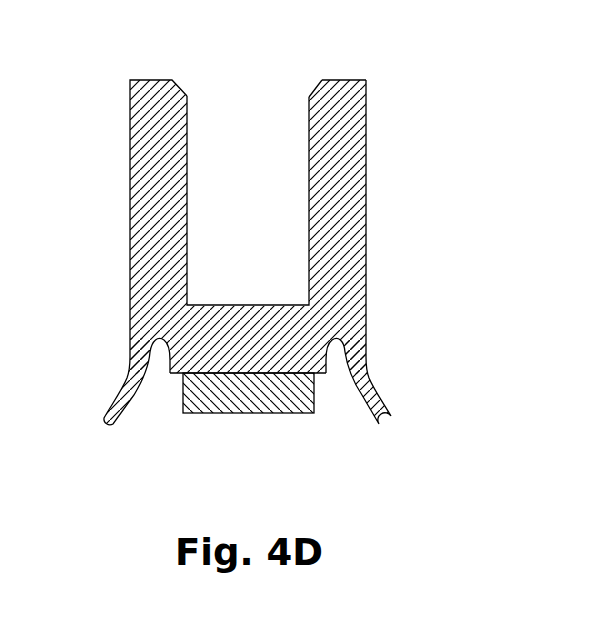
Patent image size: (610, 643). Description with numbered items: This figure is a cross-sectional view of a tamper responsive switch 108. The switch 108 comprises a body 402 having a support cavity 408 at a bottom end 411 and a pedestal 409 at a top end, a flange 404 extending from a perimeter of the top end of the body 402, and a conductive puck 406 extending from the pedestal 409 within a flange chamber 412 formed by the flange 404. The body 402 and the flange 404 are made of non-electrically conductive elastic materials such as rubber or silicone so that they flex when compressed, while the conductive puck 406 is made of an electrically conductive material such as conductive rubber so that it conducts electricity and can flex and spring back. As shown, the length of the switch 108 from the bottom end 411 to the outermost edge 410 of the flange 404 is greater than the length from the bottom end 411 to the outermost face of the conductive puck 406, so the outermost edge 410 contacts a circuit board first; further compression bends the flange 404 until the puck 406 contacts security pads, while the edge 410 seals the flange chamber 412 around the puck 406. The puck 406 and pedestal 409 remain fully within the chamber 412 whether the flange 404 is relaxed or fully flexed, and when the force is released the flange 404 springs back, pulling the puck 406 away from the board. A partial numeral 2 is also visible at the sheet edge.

The tamper responsive switch 108 is at (67, 35).
The body 402 is at (345, 118).
The flange 404 is at (126, 388).
The conductive puck 406 is at (248, 396).
The support cavity 408 is at (251, 120).
The pedestal 409 is at (264, 352).
The outermost edge of the flange 410 is at (392, 422).
The bottom end 411 is at (347, 80).
The flange chamber 412 is at (161, 373).
The partial numeral 2 is at (1, 236).